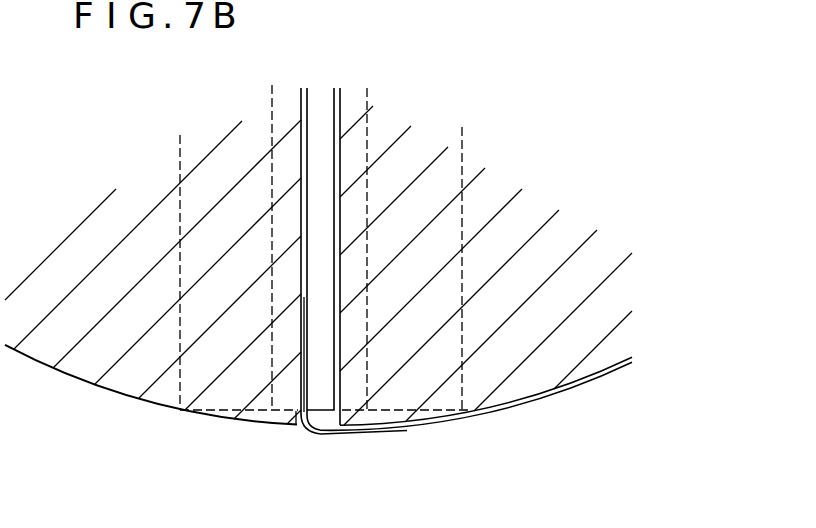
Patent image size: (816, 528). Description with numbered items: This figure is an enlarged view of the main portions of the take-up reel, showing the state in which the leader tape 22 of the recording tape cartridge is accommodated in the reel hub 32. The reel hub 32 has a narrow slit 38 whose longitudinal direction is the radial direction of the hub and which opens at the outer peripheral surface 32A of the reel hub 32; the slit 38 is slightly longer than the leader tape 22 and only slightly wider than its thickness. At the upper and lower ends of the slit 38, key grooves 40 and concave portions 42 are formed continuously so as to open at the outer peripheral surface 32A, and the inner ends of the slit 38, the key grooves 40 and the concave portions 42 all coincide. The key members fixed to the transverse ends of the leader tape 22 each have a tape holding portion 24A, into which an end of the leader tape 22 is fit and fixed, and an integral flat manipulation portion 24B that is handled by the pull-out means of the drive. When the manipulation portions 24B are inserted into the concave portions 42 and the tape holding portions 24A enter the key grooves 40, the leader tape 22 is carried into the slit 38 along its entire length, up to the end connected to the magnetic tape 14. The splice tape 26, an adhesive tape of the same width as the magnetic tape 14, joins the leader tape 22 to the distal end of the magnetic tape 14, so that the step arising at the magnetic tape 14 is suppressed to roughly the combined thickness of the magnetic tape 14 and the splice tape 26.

The magnetic tape 14 is at (493, 412).
The leader tape 22 is at (327, 120).
The tape holding portion 24A is at (355, 255).
The manipulation portion 24B is at (450, 175).
The splice tape 26 is at (328, 433).
The reel hub 32 is at (87, 373).
The outer peripheral surface 32A is at (128, 398).
The slit 38 is at (340, 175).
The key groove 40 is at (357, 375).
The concave portion 42 is at (462, 283).